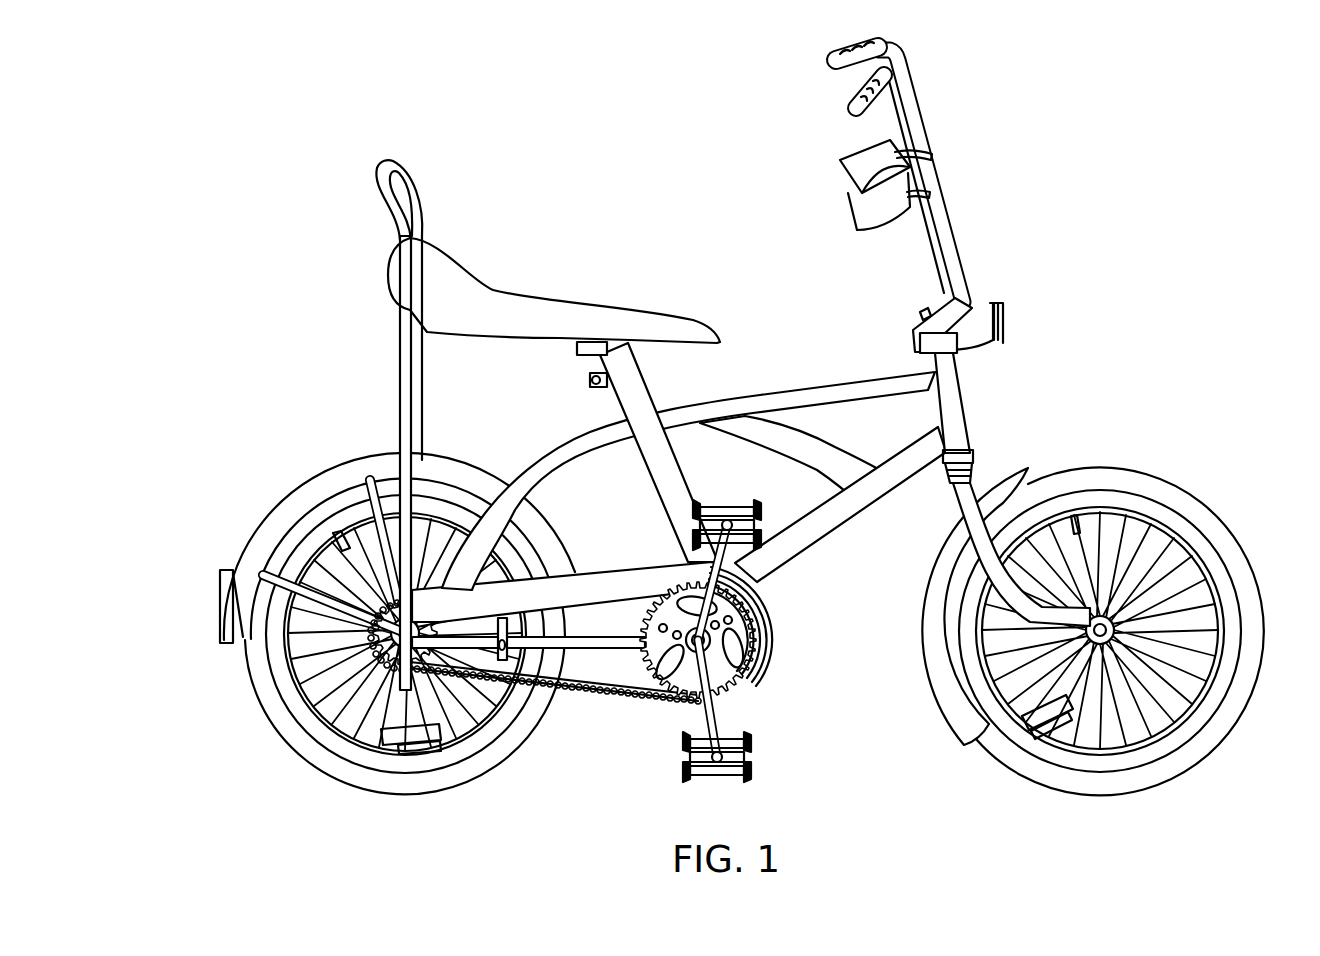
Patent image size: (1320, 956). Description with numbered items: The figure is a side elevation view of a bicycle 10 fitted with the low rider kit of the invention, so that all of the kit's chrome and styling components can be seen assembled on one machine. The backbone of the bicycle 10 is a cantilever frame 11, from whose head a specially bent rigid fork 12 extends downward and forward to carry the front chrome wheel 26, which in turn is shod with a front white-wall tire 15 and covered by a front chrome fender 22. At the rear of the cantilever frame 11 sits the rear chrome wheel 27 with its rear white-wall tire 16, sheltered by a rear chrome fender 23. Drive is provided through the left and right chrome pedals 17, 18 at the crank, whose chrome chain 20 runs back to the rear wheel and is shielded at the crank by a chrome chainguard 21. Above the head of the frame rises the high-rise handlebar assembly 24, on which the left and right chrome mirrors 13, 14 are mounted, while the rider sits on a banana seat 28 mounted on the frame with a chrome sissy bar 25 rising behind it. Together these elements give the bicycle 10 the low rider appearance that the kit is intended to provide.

The bicycle 10 is at (569, 195).
The cantilever frame 11 is at (950, 418).
The specially bent rigid fork 12 is at (970, 502).
The left chrome mirror 13 is at (873, 212).
The right chrome mirror 14 is at (860, 167).
The front white-wall tire 15 is at (1187, 530).
The rear white-wall tire 16 is at (308, 752).
The left chrome pedal 17 is at (727, 518).
The right chrome pedal 18 is at (717, 777).
The chrome chain 20 is at (585, 693).
The chrome chainguard 21 is at (767, 627).
The front chrome fender 22 is at (937, 630).
The rear chrome fender 23 is at (280, 533).
The high-rise handlebar assembly 24 is at (912, 140).
The chrome sissy bar 25 is at (392, 202).
The front chrome wheel 26 is at (1015, 740).
The rear chrome wheel 27 is at (405, 765).
The banana seat 28 is at (500, 312).